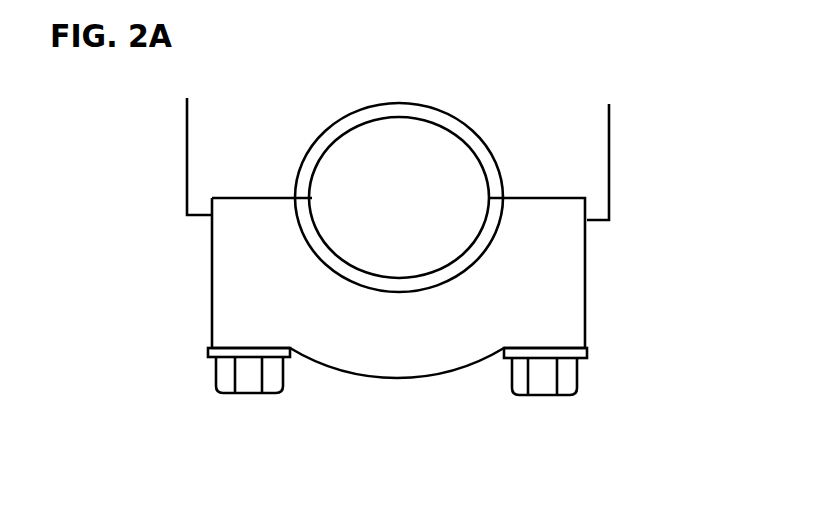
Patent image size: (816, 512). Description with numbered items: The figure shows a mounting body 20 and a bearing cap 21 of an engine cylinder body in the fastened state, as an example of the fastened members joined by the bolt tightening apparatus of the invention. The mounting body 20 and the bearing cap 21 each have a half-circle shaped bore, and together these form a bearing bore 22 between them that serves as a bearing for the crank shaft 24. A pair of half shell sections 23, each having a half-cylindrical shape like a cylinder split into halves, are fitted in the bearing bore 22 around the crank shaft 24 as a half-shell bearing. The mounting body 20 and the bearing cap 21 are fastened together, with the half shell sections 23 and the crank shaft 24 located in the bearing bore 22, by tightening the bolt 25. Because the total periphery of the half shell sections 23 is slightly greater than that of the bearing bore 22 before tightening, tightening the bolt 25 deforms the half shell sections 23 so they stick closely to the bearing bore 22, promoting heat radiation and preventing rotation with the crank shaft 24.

The mounting body 20 is at (609, 156).
The bearing cap 21 is at (585, 283).
The bearing bore 22 is at (350, 120).
The half shell section 23 is at (457, 113).
The crank shaft 24 is at (352, 187).
The bolt 25 is at (248, 383).